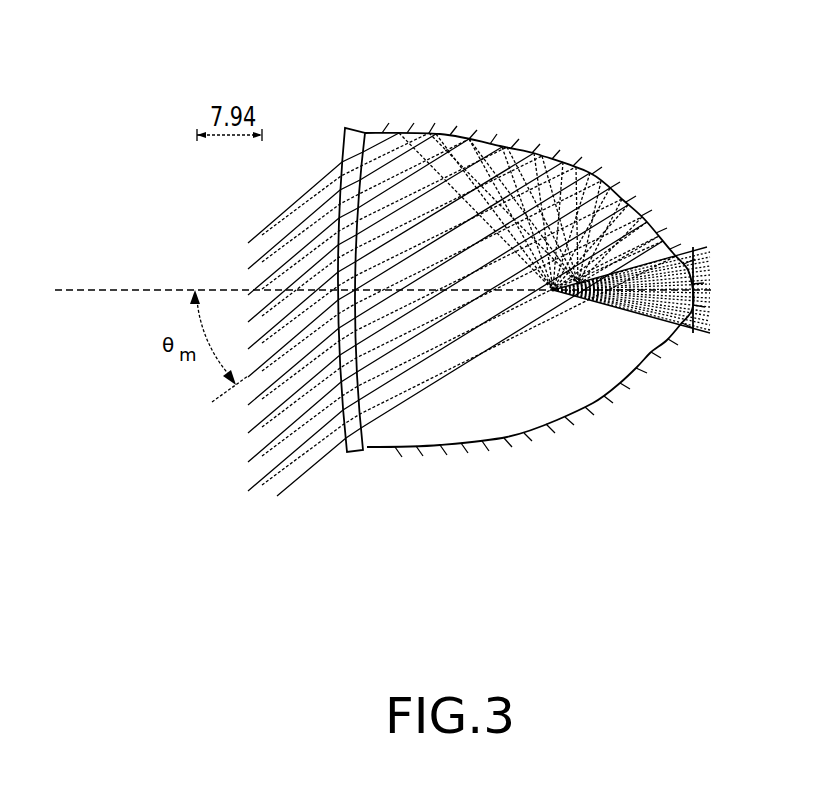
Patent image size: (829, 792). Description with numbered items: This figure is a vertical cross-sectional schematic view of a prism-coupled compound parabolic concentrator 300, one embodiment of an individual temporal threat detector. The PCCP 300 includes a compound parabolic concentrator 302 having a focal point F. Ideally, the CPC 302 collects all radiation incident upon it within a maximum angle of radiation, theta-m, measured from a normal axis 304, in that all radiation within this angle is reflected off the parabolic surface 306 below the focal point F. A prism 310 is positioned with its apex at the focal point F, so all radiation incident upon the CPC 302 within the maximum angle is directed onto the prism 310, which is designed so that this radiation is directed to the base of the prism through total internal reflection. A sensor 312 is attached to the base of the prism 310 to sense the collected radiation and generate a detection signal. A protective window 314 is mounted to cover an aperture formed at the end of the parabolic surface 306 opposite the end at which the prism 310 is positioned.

The prism-coupled compound parabolic concentrator 300 is at (684, 110).
The compound parabolic concentrator 302 is at (468, 110).
The normal axis 304 is at (134, 290).
The parabolic surface 306 is at (645, 214).
The prism 310 is at (614, 326).
The sensor 312 is at (694, 247).
The protective window 314 is at (356, 128).
The focal point F is at (552, 291).